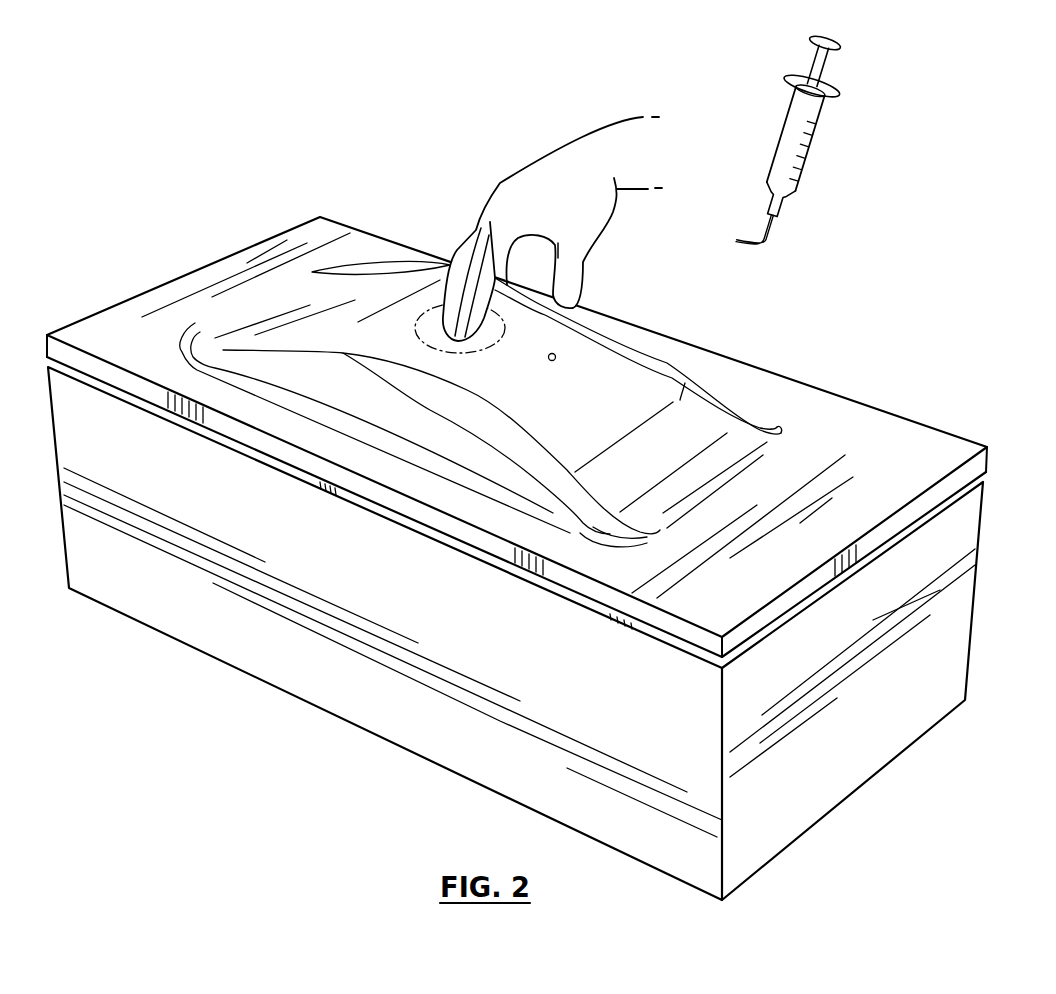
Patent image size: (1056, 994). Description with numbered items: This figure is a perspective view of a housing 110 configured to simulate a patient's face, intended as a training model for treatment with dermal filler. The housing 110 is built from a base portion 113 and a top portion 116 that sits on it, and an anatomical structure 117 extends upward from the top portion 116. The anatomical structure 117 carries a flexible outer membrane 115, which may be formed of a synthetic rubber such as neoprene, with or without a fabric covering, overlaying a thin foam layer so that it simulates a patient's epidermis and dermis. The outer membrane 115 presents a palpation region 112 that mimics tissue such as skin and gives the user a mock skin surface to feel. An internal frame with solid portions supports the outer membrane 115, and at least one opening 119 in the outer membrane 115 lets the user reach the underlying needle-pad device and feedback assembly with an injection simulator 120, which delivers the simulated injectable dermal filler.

The housing 110 is at (969, 252).
The palpation region 112 is at (416, 324).
The base portion 113 is at (405, 725).
The outer membrane 115 is at (477, 387).
The top portion 116 is at (897, 432).
The anatomical structure 117 is at (667, 358).
The opening 119 is at (557, 357).
The injection simulator 120 is at (757, 131).